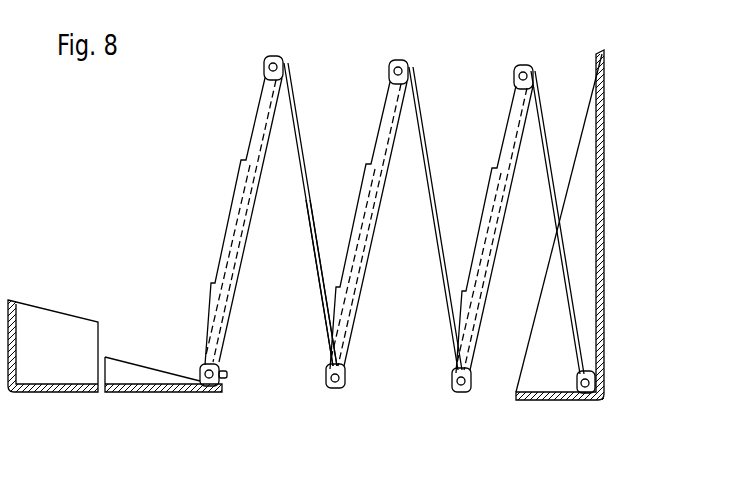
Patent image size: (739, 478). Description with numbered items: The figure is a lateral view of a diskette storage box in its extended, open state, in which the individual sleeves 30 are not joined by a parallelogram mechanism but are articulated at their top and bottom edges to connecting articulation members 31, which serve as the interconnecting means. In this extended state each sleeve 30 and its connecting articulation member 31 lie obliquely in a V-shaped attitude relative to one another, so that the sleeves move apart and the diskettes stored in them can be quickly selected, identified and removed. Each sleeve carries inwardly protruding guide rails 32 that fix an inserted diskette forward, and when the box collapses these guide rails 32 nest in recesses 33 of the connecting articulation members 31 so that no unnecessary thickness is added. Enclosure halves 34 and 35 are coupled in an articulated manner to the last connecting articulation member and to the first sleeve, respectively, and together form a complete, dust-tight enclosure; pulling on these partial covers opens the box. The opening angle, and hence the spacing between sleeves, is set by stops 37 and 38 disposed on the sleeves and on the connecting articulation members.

The sleeve 30 is at (253, 127).
The connecting articulation member 31 is at (295, 128).
The guide rail 32 is at (358, 218).
The recess 33 is at (316, 298).
The enclosure half 34 is at (600, 272).
The enclosure half 35 is at (47, 390).
The stop 37 is at (520, 66).
The stop 38 is at (523, 88).